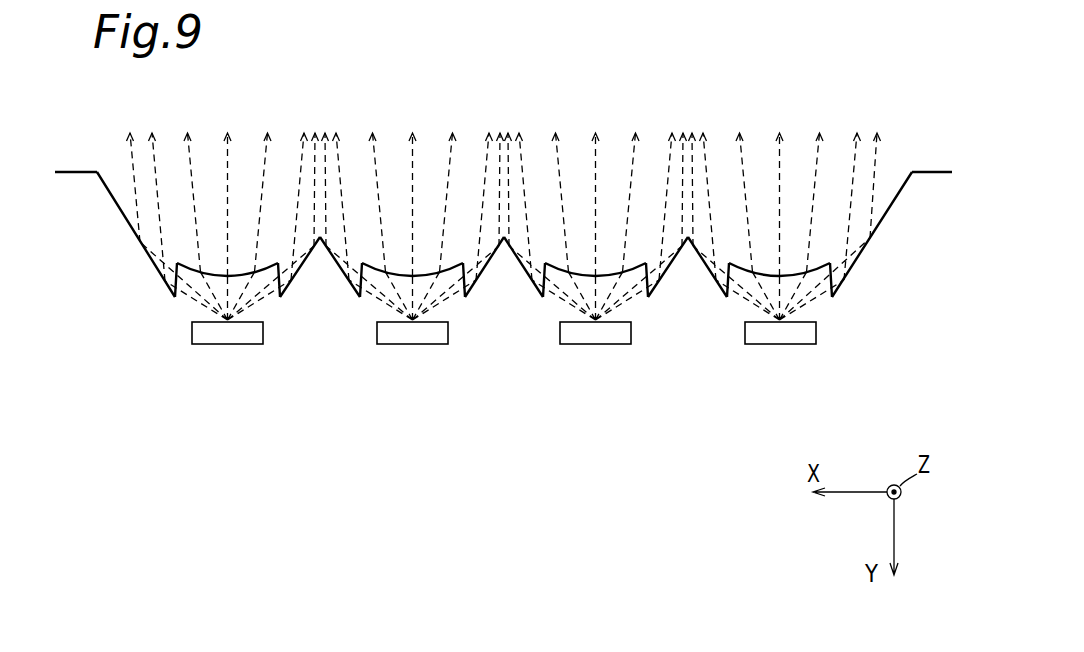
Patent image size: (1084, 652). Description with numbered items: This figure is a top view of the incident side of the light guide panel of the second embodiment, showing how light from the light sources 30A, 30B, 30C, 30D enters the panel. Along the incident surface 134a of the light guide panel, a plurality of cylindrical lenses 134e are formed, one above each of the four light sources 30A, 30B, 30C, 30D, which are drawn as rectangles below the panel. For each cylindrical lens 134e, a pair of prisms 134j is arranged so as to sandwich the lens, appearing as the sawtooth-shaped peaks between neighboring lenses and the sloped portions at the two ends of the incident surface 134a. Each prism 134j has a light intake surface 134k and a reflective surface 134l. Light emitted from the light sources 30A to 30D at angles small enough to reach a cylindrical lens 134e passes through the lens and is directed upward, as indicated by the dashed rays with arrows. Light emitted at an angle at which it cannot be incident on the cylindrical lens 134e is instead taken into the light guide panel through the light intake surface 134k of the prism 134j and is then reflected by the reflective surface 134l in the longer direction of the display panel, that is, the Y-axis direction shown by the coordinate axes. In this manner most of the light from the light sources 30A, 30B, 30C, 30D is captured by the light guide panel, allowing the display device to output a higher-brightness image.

The incident surface 134a is at (928, 173).
The prism 134j is at (128, 222).
The light intake surface 134k is at (176, 297).
The reflective surface 134l is at (708, 268).
The cylindrical lens 134e is at (265, 275).
The light source 30A is at (228, 344).
The light source 30B is at (412, 344).
The light source 30C is at (596, 344).
The light source 30D is at (780, 344).